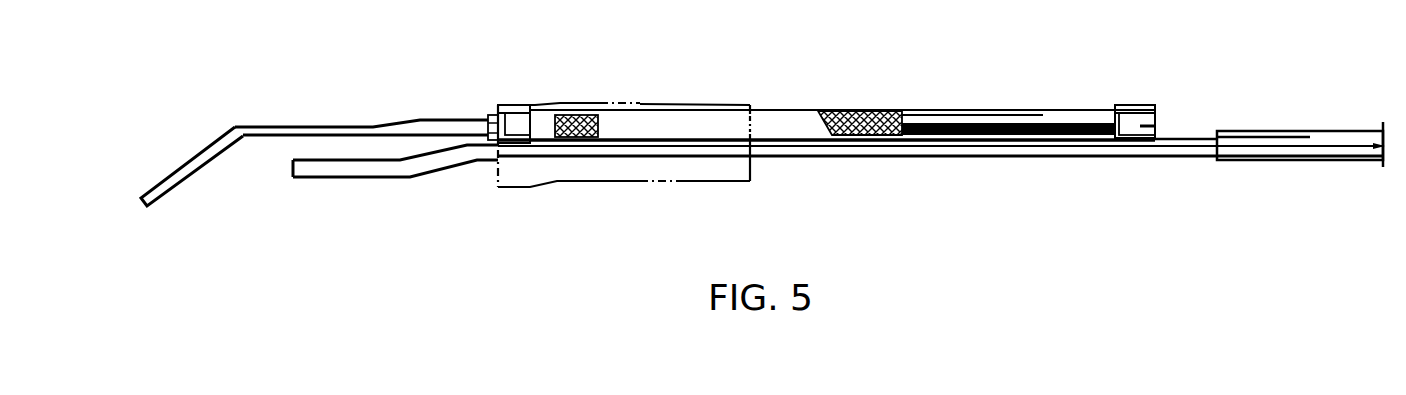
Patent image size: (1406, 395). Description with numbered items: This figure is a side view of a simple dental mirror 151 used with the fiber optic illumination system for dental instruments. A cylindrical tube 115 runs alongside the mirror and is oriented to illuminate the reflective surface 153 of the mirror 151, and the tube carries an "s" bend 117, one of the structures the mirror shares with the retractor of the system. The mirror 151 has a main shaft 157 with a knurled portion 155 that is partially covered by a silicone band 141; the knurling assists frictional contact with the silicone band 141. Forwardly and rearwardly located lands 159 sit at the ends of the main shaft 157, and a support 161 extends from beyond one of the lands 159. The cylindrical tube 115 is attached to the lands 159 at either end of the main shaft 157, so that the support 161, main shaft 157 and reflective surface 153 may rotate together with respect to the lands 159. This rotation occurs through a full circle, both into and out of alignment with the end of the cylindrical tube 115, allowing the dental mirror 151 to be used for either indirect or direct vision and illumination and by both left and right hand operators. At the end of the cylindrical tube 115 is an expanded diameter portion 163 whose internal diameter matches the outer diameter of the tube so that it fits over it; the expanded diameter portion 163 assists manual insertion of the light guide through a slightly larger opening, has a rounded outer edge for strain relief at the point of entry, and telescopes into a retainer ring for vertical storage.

The cylindrical tube 115 is at (853, 148).
The "s" bend 117 is at (432, 165).
The silicone band 141 is at (560, 110).
The dental mirror 151 is at (718, 82).
The reflective surface 153 is at (182, 190).
The knurled portion 155 is at (860, 112).
The main shaft 157 is at (997, 117).
The lands 159 is at (512, 122).
The support 161 is at (292, 125).
The expanded diameter portion 163 is at (1295, 133).